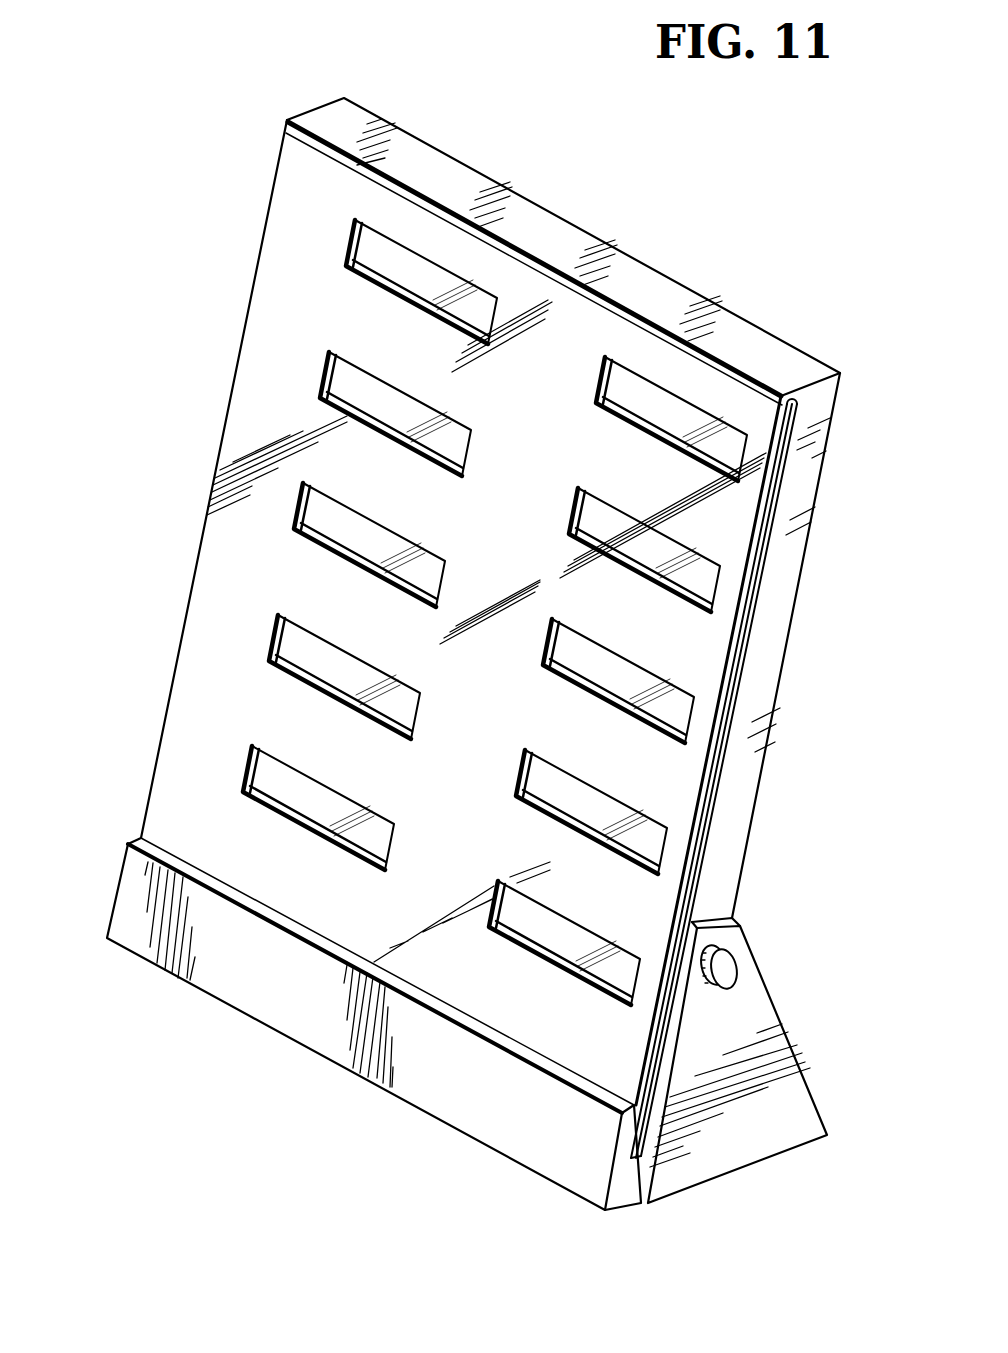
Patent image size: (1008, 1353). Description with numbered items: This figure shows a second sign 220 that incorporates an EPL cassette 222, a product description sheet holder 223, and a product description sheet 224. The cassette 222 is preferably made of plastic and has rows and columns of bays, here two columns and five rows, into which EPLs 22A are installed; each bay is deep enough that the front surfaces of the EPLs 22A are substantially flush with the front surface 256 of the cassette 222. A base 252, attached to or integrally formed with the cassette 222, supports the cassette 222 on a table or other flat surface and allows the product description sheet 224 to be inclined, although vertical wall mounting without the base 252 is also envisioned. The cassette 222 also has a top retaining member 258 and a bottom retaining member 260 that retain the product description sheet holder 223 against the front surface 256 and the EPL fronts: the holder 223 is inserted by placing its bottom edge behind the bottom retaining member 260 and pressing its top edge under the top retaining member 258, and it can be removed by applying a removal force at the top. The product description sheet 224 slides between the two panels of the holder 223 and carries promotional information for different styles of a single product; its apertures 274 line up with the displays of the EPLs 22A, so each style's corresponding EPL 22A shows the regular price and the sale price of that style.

The EPL 22A is at (360, 241).
The sign 220 is at (177, 409).
The EPL cassette 222 is at (828, 511).
The product description sheet holder 223 is at (204, 636).
The product description sheet 224 is at (762, 626).
The base 252 is at (790, 1063).
The front surface 256 is at (762, 715).
The top retaining member 258 is at (568, 235).
The bottom retaining member 260 is at (127, 921).
The aperture 274 is at (570, 521).